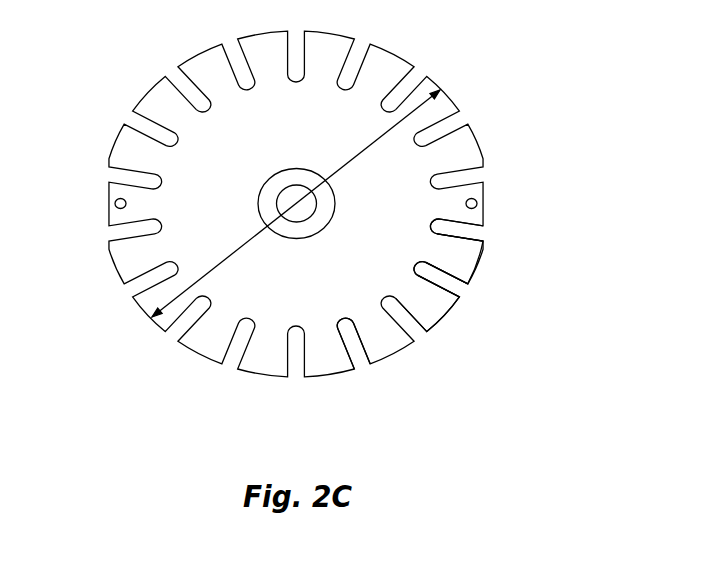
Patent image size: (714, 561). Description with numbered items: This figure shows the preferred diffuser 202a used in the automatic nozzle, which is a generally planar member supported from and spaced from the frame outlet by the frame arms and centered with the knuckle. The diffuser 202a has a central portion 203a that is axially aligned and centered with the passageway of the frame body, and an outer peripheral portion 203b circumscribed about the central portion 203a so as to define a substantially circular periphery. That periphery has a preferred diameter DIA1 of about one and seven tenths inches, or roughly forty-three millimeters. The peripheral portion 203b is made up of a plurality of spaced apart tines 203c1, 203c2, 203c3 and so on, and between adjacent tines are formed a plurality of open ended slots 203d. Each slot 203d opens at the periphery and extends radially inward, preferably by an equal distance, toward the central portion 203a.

The diffuser 202a is at (529, 90).
The central portion 203a is at (400, 228).
The outer peripheral portion 203b is at (473, 191).
The tine 203c1 is at (465, 253).
The tine 203c2 is at (440, 304).
The tine 203c3 is at (358, 365).
The open ended slot 203d is at (473, 232).
The diameter DIA1 is at (228, 261).